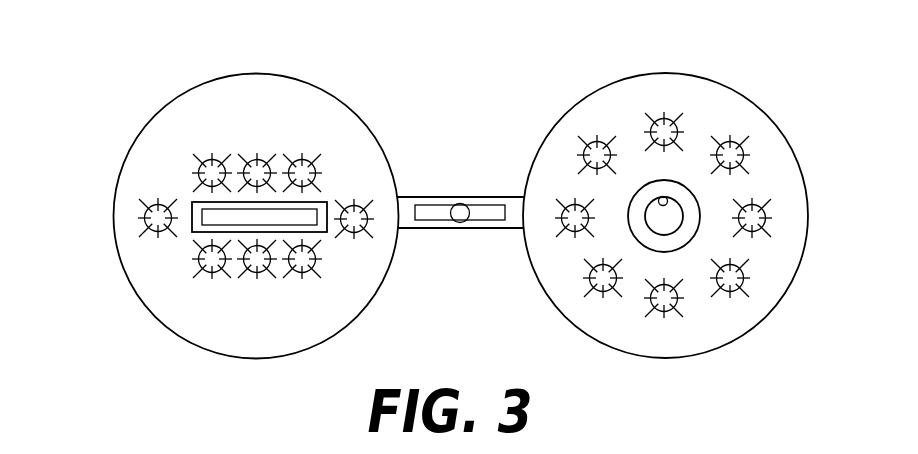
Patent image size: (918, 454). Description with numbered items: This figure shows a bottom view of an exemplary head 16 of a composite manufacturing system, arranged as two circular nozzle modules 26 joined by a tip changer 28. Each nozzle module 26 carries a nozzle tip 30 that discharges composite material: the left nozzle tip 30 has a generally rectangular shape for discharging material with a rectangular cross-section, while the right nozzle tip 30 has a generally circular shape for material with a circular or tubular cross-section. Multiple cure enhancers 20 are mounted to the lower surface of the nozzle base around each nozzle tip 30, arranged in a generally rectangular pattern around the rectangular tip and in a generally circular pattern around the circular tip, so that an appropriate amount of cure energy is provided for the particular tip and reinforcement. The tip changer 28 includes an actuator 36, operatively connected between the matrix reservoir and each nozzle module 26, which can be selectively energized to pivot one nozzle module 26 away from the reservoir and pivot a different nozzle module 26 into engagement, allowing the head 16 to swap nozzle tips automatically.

The head 16 is at (64, 97).
The cure enhancers 20 is at (163, 233).
The nozzle module 26 is at (335, 125).
The tip changer 28 is at (490, 164).
The nozzle tip 30 is at (303, 213).
The actuator 36 is at (483, 215).